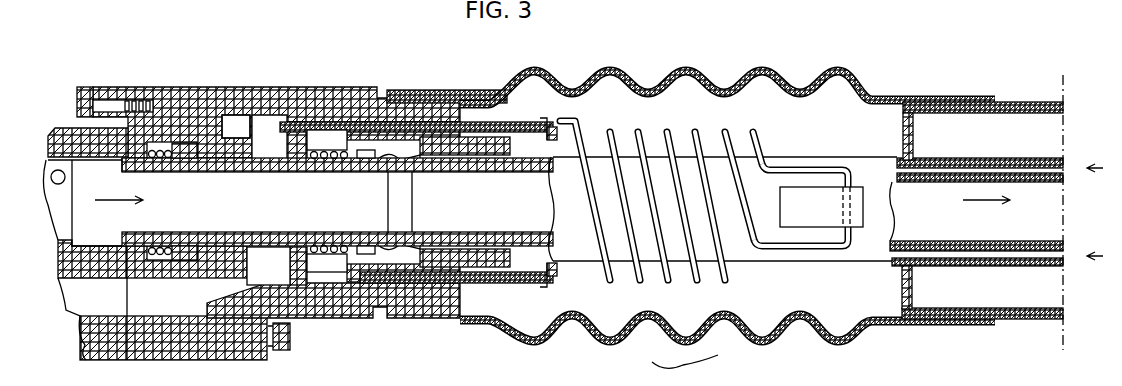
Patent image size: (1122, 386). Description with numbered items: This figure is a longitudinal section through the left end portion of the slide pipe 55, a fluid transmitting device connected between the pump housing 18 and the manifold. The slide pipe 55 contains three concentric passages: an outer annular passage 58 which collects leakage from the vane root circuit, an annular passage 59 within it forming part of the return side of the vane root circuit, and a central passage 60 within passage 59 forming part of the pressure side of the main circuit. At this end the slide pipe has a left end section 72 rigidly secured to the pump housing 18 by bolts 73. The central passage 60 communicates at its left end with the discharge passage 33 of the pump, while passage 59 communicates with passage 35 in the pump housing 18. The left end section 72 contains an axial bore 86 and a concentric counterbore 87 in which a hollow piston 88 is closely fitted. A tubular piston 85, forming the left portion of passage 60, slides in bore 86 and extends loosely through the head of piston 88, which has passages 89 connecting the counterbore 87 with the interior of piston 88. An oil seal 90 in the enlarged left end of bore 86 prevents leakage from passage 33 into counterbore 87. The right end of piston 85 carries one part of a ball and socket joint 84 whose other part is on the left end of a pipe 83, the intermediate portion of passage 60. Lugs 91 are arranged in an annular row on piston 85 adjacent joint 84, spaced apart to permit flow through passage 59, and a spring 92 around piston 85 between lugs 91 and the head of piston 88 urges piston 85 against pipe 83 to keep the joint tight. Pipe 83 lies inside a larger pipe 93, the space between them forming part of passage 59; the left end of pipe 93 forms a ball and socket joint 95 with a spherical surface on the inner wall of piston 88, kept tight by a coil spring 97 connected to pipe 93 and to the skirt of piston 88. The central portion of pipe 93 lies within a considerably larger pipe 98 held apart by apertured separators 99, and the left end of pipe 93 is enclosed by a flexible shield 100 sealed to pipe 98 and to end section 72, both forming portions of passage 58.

The pump housing 18 is at (57, 140).
The discharge passage 33 is at (62, 226).
The passage 35 is at (88, 306).
The slide pipe 55 is at (685, 370).
The outer annular passage 58 is at (823, 305).
The annular passage 59 is at (174, 305).
The central passage 60 is at (143, 226).
The left end section 72 is at (223, 97).
The bolts 73 is at (83, 107).
The pipe 83 is at (550, 238).
The ball and socket joint 84 is at (407, 157).
The tubular piston 85 is at (125, 160).
The axial bore 86 is at (220, 242).
The counterbore 87 is at (273, 123).
The hollow piston 88 is at (367, 122).
The passages 89 is at (303, 139).
The oil seal 90 is at (189, 150).
The lugs 91 is at (363, 155).
The spring 92 is at (330, 163).
The pipe 93 is at (843, 163).
The ball and socket joint 95 is at (400, 272).
The coil spring 97 is at (642, 148).
The pipe 98 is at (1015, 105).
The apertured separators 99 is at (912, 118).
The flexible shield 100 is at (595, 333).